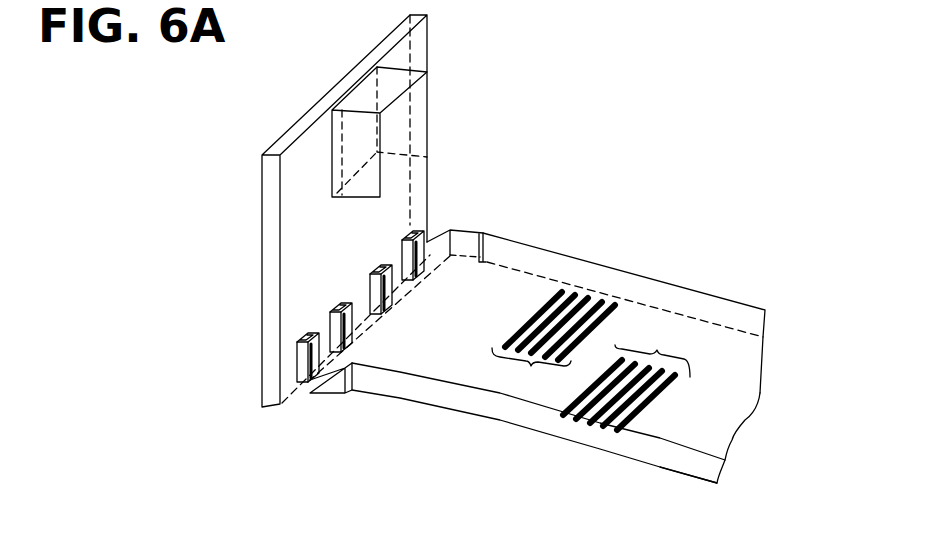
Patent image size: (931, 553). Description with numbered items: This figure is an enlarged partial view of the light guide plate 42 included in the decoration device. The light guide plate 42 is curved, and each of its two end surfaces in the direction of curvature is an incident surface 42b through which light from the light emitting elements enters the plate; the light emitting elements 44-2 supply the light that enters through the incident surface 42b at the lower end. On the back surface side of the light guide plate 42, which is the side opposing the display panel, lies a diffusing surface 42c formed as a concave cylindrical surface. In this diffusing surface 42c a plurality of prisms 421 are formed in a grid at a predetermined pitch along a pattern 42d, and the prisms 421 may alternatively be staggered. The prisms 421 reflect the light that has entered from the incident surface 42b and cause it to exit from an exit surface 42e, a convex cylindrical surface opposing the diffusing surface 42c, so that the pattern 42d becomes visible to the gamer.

The light guide plate 42 is at (540, 339).
The incident surface 42b is at (447, 228).
The diffusing surface 42c is at (483, 416).
The pattern 42d is at (662, 347).
The exit surface 42e is at (733, 305).
The prisms 421 is at (613, 437).
The light emitting elements 44-2 is at (298, 350).